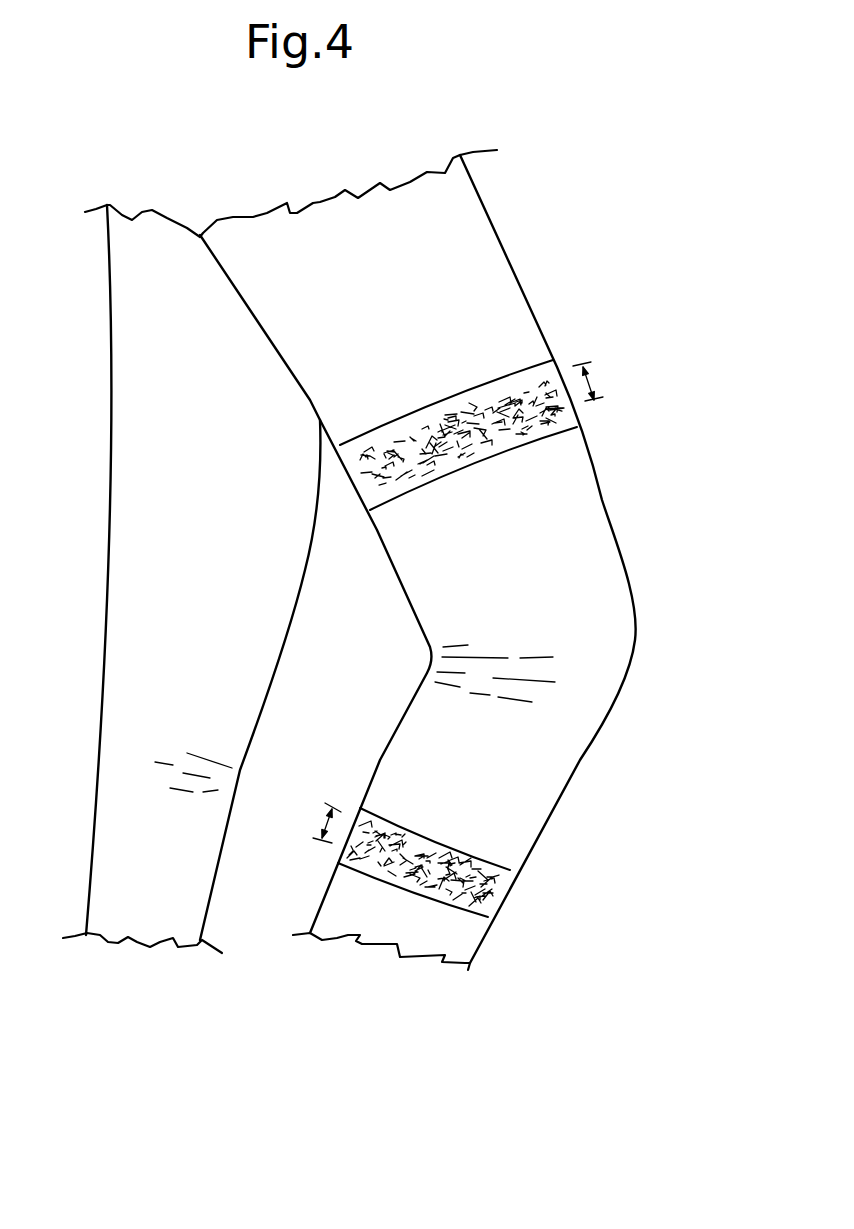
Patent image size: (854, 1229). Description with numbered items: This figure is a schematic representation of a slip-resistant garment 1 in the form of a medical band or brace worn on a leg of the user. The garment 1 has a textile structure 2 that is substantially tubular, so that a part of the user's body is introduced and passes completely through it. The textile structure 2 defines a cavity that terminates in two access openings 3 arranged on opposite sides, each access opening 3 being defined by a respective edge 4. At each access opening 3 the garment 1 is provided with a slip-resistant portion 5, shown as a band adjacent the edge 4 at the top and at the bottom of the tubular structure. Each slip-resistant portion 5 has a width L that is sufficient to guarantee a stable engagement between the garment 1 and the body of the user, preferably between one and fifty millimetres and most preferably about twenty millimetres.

The slip-resistant garment 1 is at (624, 448).
The textile structure 2 is at (642, 612).
The access opening 3 is at (536, 358).
The edge 4 is at (493, 388).
The slip-resistant portion 5 is at (398, 437).
The width L is at (590, 378).